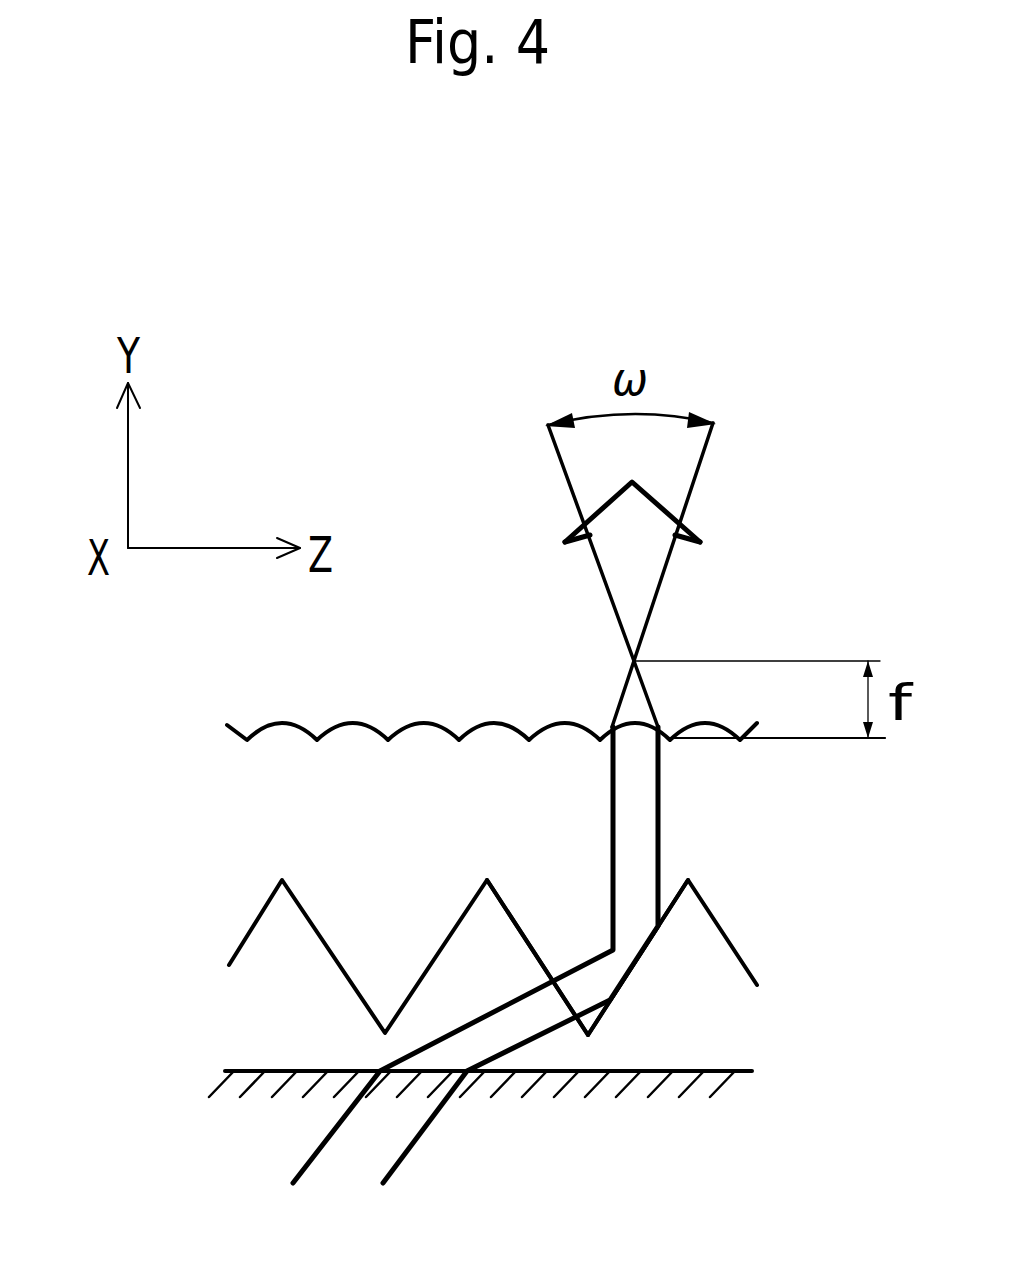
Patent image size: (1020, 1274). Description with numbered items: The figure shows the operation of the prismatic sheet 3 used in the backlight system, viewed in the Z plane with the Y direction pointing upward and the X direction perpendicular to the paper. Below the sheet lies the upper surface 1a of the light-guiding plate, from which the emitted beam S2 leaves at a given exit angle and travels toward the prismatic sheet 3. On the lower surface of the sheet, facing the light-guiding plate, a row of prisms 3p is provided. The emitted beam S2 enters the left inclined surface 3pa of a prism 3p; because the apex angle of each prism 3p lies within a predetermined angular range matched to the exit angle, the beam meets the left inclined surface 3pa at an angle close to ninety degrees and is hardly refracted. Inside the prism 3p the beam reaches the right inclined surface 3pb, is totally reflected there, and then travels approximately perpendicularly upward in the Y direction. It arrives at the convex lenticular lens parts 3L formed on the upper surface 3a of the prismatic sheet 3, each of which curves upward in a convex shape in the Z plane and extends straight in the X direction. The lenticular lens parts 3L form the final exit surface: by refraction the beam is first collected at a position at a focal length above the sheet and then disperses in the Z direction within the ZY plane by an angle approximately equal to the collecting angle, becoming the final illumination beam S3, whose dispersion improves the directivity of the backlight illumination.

The prismatic sheet 3 is at (338, 813).
The convex lenticular lens part 3L is at (568, 723).
The upper surface 3a is at (697, 742).
The prism 3p is at (378, 970).
The left inclined surface 3pa is at (530, 950).
The right inclined surface 3pb is at (631, 970).
The upper surface of light-guiding plate 1a is at (278, 1071).
The emitted beam S2 is at (513, 1030).
The final illumination beam S3 is at (637, 558).